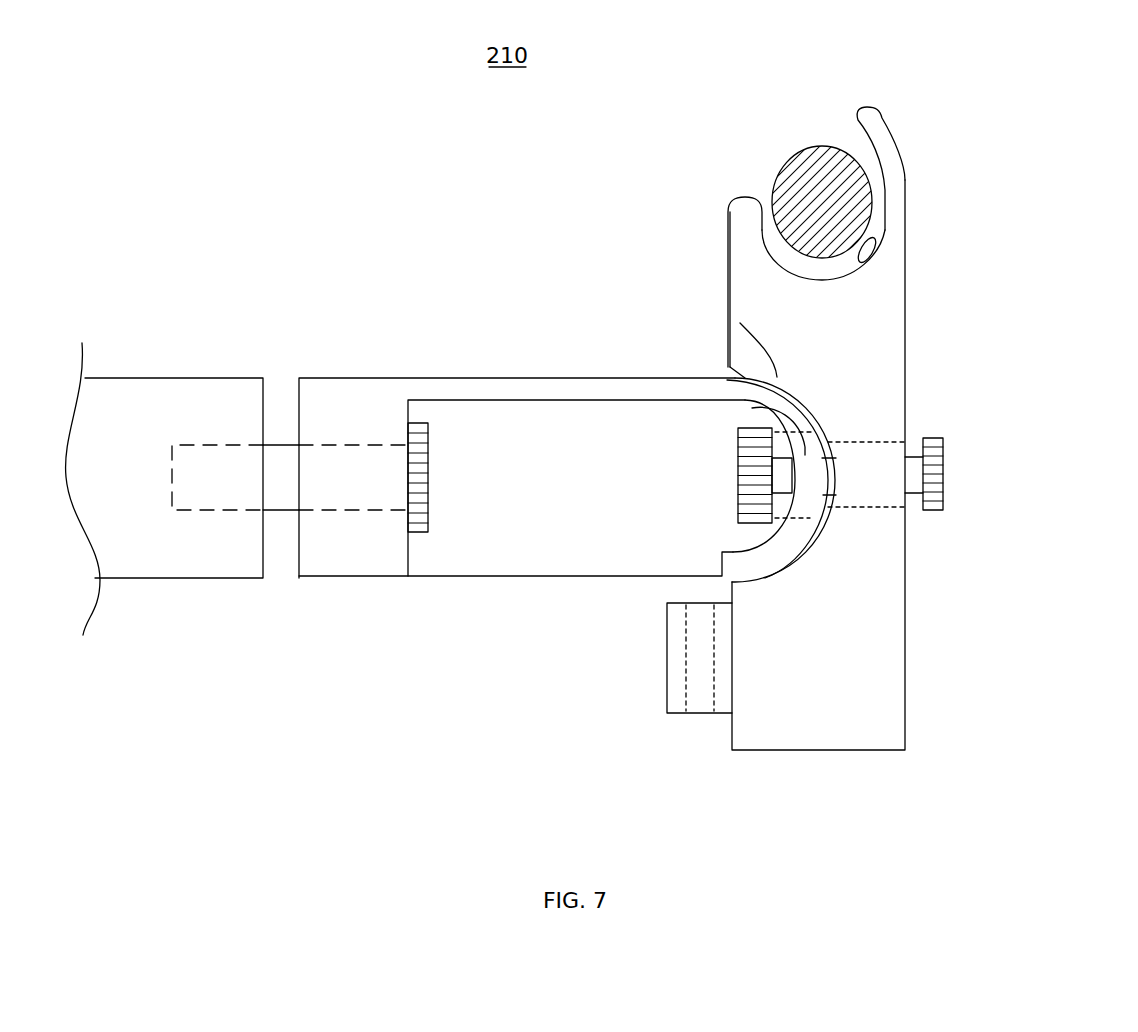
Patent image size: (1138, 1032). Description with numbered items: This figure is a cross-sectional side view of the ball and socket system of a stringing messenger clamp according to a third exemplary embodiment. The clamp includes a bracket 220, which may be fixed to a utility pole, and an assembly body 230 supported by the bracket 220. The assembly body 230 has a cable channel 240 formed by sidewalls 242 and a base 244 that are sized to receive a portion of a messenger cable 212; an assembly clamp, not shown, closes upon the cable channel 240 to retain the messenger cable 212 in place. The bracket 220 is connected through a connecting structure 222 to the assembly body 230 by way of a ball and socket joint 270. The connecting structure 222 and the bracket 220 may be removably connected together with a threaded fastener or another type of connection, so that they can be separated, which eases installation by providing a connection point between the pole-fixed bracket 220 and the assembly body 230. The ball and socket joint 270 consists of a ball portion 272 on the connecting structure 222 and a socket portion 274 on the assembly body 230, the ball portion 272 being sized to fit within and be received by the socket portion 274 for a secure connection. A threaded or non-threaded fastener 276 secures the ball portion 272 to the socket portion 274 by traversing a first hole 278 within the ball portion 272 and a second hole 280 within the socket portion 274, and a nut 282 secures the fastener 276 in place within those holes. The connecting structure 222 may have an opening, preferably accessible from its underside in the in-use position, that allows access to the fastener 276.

The messenger cable 212 is at (820, 163).
The bracket 220 is at (208, 547).
The connecting structure 222 is at (353, 558).
The assembly body 230 is at (887, 695).
The cable channel 240 is at (760, 189).
The sidewalls 242 is at (748, 230).
The base 244 is at (873, 238).
The ball and socket joint 270 is at (718, 366).
The ball portion 272 is at (740, 323).
The socket portion 274 is at (803, 400).
The fastener 276 is at (755, 493).
The first hole 278 is at (752, 408).
The second hole 280 is at (887, 483).
The nut 282 is at (933, 480).